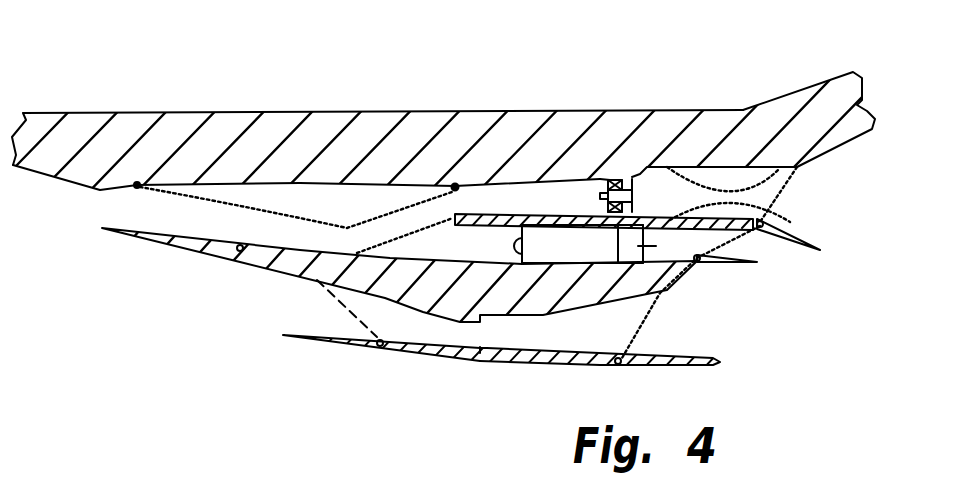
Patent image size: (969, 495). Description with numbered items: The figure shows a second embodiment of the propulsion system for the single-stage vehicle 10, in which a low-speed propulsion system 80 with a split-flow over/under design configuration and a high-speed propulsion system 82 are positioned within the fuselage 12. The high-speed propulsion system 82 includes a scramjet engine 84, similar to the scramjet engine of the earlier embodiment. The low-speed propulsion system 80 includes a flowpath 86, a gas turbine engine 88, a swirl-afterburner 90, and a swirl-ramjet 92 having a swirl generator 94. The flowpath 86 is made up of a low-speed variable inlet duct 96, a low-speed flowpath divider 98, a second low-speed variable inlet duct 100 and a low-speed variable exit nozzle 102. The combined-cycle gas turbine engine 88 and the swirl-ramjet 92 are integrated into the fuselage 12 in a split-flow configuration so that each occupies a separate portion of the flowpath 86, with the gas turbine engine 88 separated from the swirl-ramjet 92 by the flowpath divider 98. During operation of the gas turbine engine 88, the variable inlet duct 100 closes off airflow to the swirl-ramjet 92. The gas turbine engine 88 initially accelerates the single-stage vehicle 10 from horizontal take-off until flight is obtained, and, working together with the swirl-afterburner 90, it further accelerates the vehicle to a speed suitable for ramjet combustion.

The single-stage vehicle 10 is at (858, 179).
The fuselage 12 is at (583, 150).
The low-speed propulsion system 80 is at (462, 199).
The high-speed propulsion system 82 is at (363, 366).
The scramjet engine 84 is at (482, 328).
The flowpath 86 is at (100, 205).
The gas turbine engine 88 is at (557, 250).
The swirl-afterburner 90 is at (642, 261).
The swirl-ramjet 92 is at (603, 169).
The swirl generator 94 is at (633, 174).
The low-speed variable inlet duct 96 is at (204, 258).
The low-speed flowpath divider 98 is at (517, 214).
The low-speed variable inlet duct 100 is at (410, 231).
The low-speed variable exit nozzle 102 is at (792, 217).